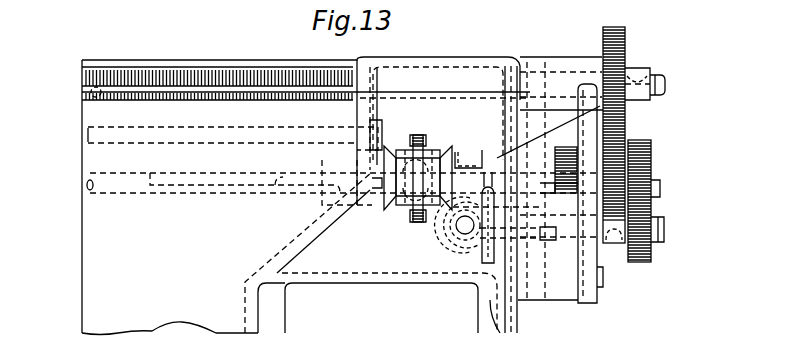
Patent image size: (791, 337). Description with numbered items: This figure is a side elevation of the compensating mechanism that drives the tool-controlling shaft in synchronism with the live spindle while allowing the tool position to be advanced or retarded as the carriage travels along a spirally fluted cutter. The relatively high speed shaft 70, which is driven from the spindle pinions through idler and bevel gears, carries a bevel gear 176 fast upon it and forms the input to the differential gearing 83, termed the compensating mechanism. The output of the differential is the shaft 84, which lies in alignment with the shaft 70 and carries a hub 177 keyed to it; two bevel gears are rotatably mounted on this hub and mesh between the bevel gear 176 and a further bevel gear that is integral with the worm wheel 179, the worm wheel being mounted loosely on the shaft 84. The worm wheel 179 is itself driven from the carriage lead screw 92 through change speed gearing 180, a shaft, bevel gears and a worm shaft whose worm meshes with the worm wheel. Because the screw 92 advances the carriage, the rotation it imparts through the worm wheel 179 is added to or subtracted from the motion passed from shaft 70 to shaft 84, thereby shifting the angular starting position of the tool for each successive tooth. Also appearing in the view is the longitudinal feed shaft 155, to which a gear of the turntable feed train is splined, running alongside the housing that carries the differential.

The high speed shaft 70 is at (128, 193).
The differential gearing 83 is at (404, 152).
The shaft 84 is at (488, 170).
The screw 92 is at (98, 97).
The longitudinal feed shaft 155 is at (100, 143).
The bevel gear 176 is at (386, 206).
The hub 177 is at (407, 212).
The worm wheel 179 is at (458, 158).
The change speed gearing 180 is at (652, 156).